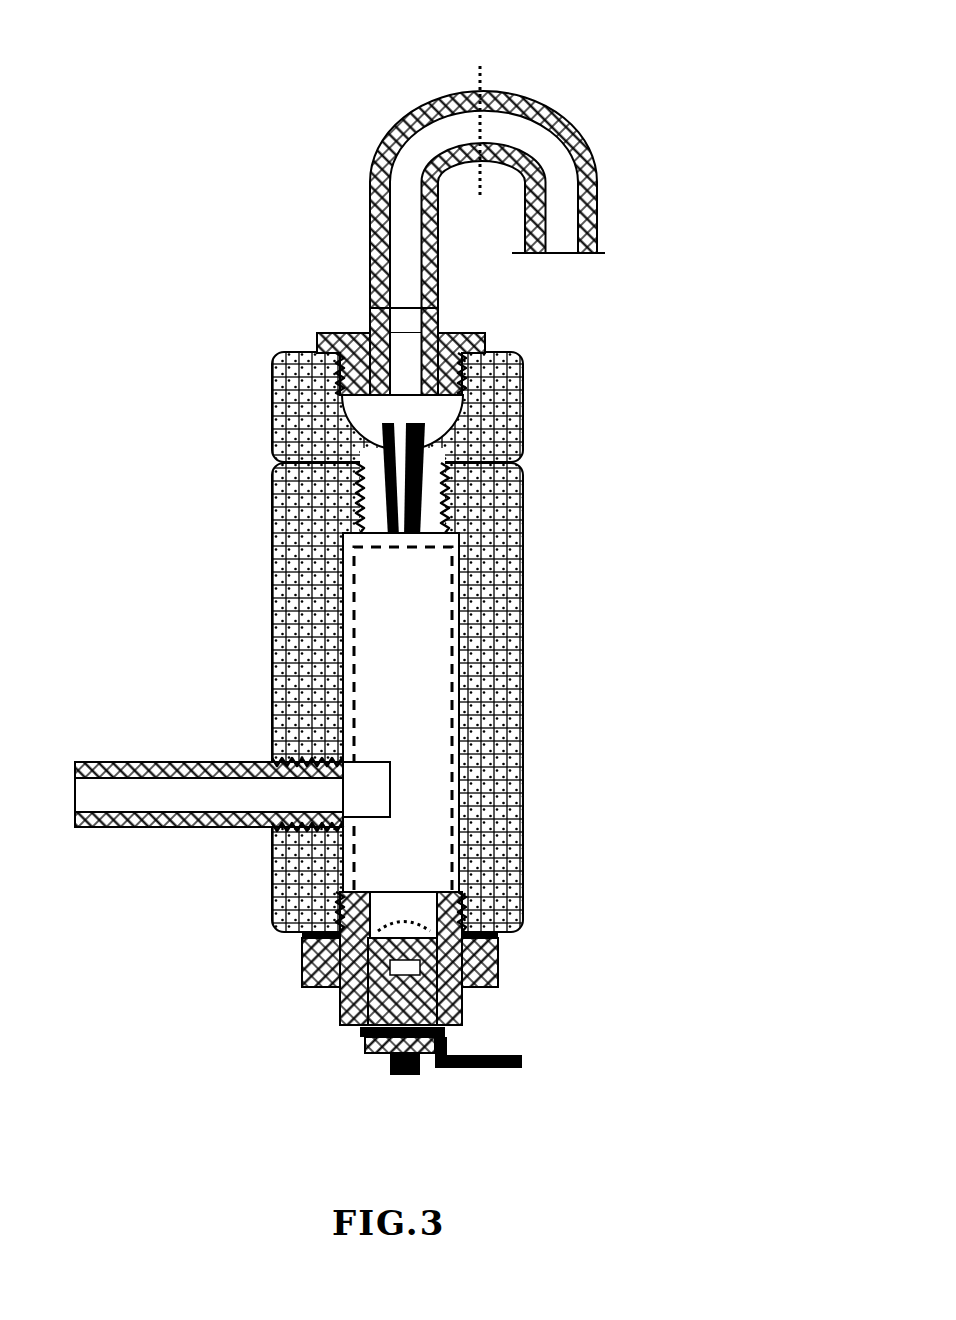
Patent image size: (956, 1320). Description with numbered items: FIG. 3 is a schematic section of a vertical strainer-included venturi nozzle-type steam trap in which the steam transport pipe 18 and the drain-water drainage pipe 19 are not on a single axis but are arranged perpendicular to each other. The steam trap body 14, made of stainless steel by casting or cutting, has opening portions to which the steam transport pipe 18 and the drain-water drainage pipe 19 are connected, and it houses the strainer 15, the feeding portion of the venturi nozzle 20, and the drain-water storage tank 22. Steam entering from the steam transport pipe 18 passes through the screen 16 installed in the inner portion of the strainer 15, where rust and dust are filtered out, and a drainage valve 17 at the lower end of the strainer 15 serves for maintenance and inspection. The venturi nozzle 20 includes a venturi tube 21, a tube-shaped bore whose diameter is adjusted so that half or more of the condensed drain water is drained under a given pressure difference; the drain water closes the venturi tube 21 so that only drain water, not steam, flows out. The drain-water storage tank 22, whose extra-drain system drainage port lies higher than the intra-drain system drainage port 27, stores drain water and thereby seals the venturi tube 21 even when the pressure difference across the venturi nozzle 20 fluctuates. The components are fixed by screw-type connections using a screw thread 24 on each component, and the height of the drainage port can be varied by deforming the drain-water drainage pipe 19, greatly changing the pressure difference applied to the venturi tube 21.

The steam trap body 14 is at (528, 650).
The strainer 15 is at (466, 731).
The screen 16 is at (465, 818).
The drainage valve 17 is at (325, 994).
The steam transport pipe 18 is at (167, 755).
The drain-water drainage pipe 19 is at (550, 100).
The venturi nozzle 20 is at (432, 497).
The venturi tube 21 is at (410, 553).
The drain-water storage tank 22 is at (470, 417).
The screw thread 24 is at (360, 340).
The intra-drain system drainage port 27 is at (396, 411).